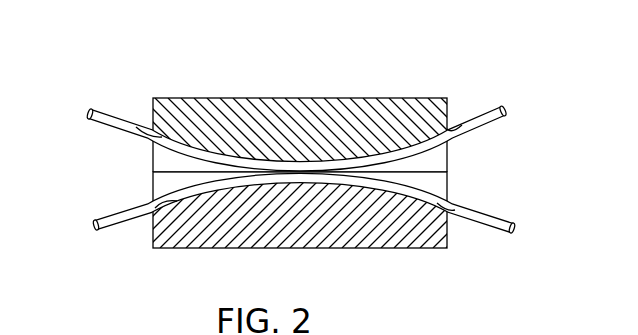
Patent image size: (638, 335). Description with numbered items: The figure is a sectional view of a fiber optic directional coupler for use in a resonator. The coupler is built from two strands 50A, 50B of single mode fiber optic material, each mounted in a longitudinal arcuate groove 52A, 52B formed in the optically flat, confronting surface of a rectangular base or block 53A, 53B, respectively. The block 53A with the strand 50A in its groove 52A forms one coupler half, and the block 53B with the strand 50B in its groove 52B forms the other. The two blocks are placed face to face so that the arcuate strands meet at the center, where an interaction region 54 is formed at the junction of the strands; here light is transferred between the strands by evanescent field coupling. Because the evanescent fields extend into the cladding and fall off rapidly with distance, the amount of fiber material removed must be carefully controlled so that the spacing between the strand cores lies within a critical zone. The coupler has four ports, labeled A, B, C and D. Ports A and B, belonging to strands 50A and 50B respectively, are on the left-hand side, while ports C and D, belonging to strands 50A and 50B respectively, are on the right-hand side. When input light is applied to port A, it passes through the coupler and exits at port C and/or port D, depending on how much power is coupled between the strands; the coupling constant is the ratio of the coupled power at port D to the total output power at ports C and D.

The strand of single mode fiber optic material 50A is at (118, 128).
The strand of single mode fiber optic material 50B is at (125, 205).
The longitudinal arcuate groove 52A is at (141, 134).
The longitudinal arcuate groove 52B is at (156, 210).
The rectangular base or block 53A is at (353, 117).
The rectangular base or block 53B is at (302, 232).
The interaction region 54 is at (253, 157).
The port A is at (88, 114).
The port B is at (92, 226).
The port C is at (505, 109).
The port D is at (541, 230).